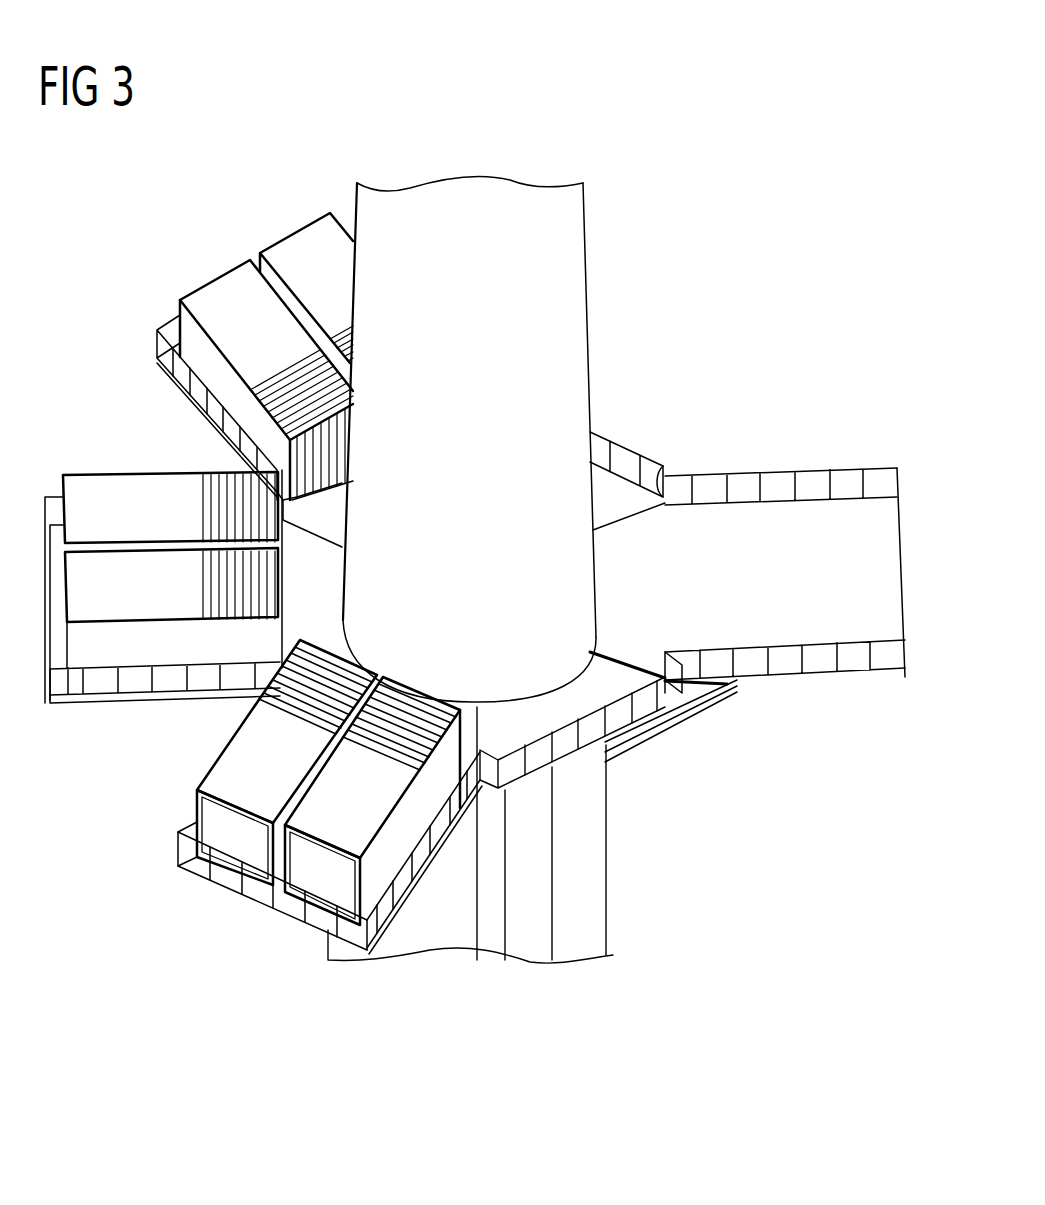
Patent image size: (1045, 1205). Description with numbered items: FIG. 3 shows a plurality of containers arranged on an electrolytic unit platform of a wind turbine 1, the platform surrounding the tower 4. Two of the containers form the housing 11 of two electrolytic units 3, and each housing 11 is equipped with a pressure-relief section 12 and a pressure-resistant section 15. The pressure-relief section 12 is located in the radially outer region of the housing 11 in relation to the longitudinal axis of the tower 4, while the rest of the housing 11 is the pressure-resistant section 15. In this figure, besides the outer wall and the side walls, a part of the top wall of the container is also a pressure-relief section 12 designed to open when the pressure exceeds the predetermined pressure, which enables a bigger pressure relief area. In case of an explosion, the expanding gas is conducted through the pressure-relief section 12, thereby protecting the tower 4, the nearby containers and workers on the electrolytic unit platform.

The wind turbine 1 is at (664, 172).
The electrolytic unit 3 is at (172, 790).
The tower 4 is at (573, 297).
The housing 11 is at (330, 853).
The pressure-relief section 12 is at (247, 760).
The pressure-resistant section 15 is at (318, 657).